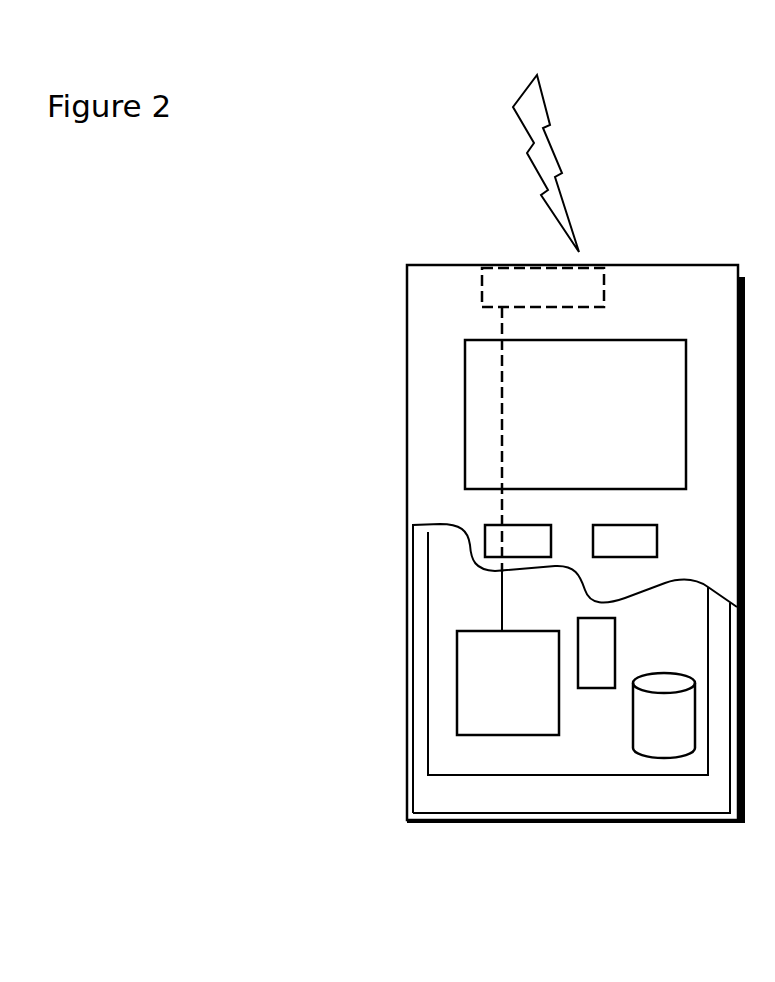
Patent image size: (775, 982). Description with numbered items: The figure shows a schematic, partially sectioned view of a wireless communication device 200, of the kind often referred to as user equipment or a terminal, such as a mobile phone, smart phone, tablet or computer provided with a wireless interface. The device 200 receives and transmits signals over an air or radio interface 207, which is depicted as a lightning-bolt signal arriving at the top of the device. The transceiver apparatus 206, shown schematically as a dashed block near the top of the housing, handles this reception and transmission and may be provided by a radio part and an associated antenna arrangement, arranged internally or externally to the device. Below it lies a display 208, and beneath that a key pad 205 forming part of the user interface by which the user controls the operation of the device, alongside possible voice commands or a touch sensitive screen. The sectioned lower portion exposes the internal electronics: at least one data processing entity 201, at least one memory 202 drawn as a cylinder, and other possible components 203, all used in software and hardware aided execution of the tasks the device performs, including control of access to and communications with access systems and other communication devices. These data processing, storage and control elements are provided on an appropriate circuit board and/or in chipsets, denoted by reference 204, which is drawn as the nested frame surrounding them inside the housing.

The communication device 200 is at (407, 312).
The data processing entity 201 is at (465, 665).
The memory 202 is at (657, 727).
The other possible components 203 is at (597, 637).
The circuit board 204 is at (457, 755).
The key pad 205 is at (490, 542).
The transceiver apparatus 206 is at (593, 282).
The radio interface 207 is at (580, 187).
The display 208 is at (483, 399).